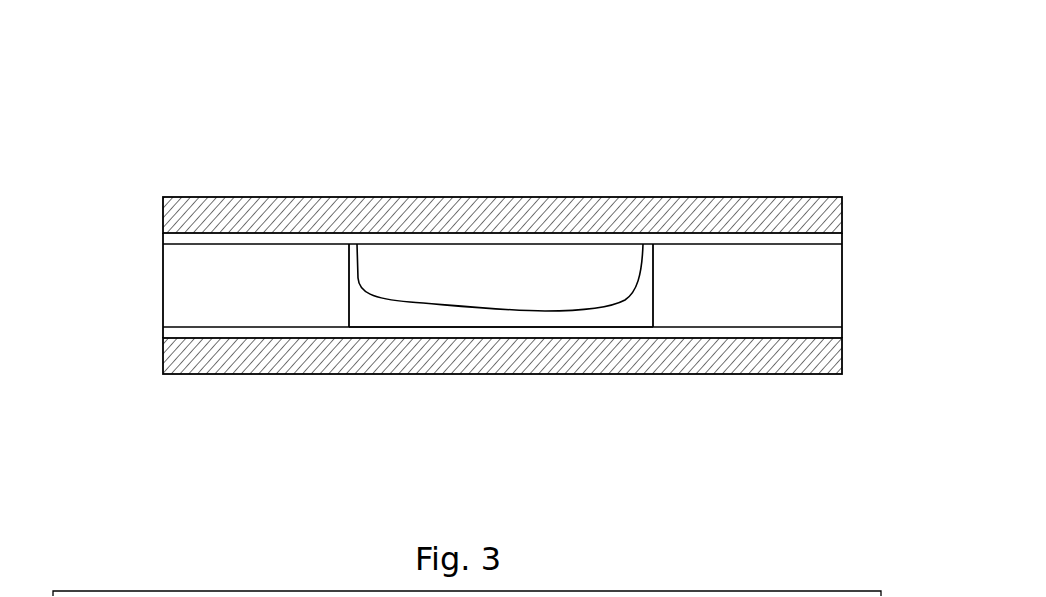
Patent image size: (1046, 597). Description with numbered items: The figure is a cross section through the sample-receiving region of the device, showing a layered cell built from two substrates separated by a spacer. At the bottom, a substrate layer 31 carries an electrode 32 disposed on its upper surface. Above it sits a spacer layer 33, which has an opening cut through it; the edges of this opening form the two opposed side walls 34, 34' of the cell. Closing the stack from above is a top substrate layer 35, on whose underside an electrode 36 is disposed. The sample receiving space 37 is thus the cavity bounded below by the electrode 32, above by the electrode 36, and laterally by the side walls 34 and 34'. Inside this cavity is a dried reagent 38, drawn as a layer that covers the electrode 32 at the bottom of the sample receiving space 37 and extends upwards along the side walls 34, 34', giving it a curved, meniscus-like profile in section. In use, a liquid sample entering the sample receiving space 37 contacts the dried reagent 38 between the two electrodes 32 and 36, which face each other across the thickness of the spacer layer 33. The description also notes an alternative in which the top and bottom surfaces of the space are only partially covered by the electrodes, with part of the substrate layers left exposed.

The substrate layer 31 is at (232, 372).
The electrode 32 is at (537, 323).
The spacer layer 33 is at (247, 303).
The side wall 34 is at (734, 381).
The side wall 34' is at (222, 203).
The top substrate layer 35 is at (430, 208).
The electrode 36 is at (549, 243).
The sample receiving space 37 is at (500, 277).
The dried reagent 38 is at (398, 313).